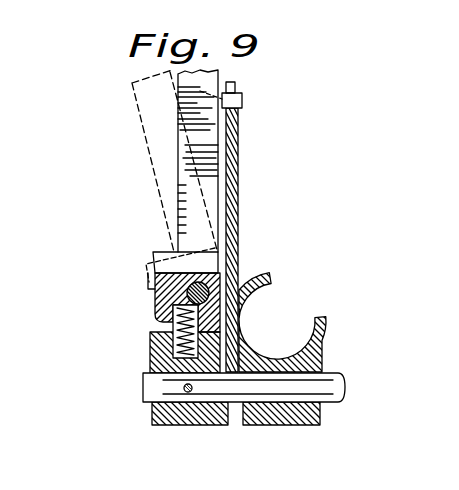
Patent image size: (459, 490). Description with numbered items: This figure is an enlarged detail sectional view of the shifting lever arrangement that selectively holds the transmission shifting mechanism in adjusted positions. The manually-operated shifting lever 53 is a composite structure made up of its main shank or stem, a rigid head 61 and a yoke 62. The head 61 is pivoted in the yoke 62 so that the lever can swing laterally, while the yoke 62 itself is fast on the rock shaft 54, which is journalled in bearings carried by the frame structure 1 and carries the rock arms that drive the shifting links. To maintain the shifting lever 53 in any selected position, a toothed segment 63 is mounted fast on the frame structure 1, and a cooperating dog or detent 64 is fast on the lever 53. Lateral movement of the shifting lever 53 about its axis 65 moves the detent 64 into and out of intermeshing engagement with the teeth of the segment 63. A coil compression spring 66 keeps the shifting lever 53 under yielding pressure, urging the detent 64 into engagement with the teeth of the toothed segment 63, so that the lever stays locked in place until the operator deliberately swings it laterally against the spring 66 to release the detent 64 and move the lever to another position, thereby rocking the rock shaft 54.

The frame structure 1 is at (334, 324).
The shifting lever 53 is at (180, 203).
The rock shaft 54 is at (158, 383).
The rigid head 61 is at (153, 253).
The yoke 62 is at (180, 417).
The toothed segment 63 is at (239, 197).
The dog or detent 64 is at (242, 100).
The axis 65 is at (209, 286).
The coil compression spring 66 is at (173, 338).